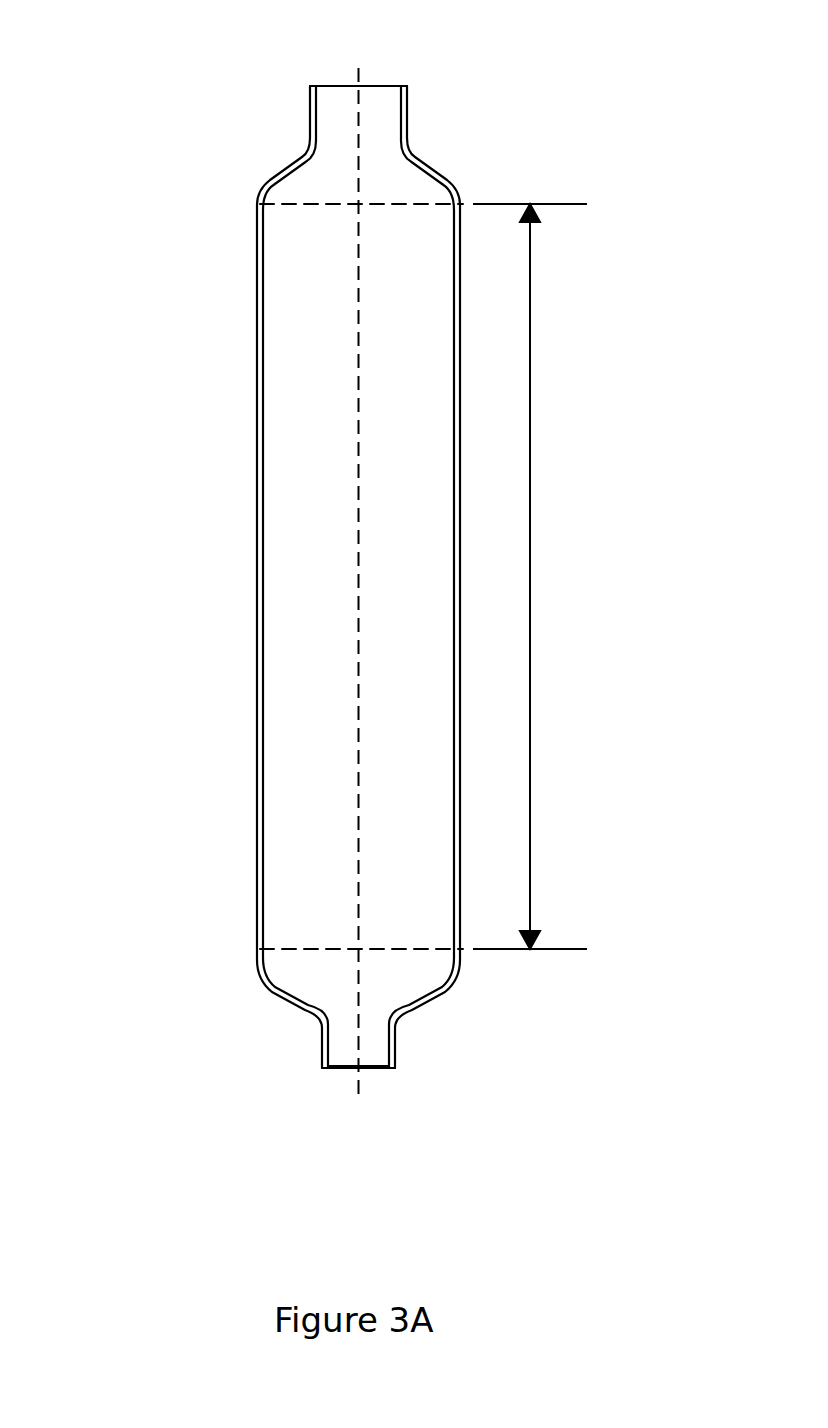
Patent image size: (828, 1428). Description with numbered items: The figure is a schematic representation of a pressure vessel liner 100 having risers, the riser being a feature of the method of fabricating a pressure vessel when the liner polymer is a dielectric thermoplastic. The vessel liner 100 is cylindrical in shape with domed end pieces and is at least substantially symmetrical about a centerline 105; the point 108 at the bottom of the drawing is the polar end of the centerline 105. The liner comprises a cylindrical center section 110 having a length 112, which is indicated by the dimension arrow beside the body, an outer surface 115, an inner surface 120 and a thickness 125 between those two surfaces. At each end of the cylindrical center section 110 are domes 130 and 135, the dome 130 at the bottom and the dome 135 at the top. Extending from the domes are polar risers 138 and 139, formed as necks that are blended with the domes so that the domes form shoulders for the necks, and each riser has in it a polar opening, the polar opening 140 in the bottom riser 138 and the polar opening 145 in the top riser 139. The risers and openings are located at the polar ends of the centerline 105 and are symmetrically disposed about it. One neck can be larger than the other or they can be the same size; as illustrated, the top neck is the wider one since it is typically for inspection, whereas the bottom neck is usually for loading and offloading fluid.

The pressure vessel liner 100 is at (355, 585).
The centerline 105 is at (357, 770).
The polar end 108 is at (358, 1071).
The cylindrical center section 110 is at (328, 458).
The length 112 is at (530, 576).
The outer surface 115 is at (257, 792).
The inner surface 120 is at (263, 702).
The thickness 125 is at (258, 602).
The dome 130 is at (382, 973).
The dome 135 is at (312, 178).
The polar riser 138 is at (320, 1047).
The polar riser 139 is at (311, 114).
The polar opening 140 is at (372, 1050).
The polar opening 145 is at (340, 104).